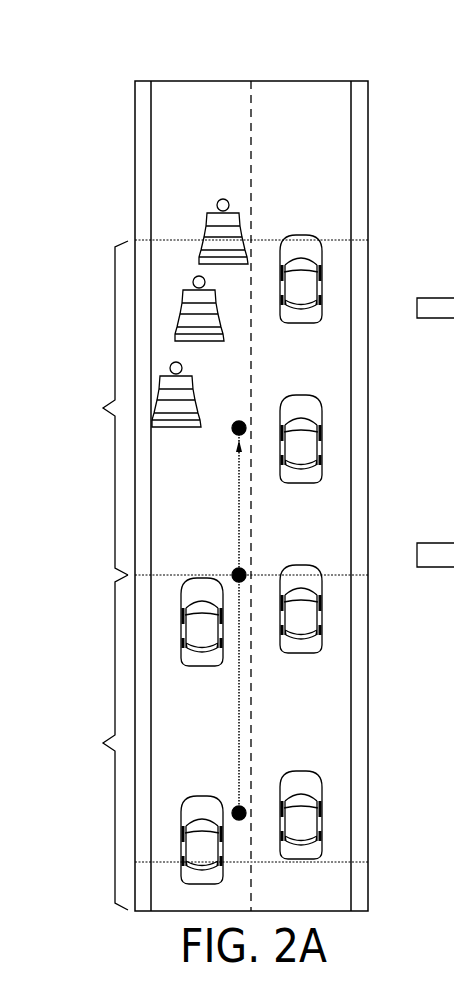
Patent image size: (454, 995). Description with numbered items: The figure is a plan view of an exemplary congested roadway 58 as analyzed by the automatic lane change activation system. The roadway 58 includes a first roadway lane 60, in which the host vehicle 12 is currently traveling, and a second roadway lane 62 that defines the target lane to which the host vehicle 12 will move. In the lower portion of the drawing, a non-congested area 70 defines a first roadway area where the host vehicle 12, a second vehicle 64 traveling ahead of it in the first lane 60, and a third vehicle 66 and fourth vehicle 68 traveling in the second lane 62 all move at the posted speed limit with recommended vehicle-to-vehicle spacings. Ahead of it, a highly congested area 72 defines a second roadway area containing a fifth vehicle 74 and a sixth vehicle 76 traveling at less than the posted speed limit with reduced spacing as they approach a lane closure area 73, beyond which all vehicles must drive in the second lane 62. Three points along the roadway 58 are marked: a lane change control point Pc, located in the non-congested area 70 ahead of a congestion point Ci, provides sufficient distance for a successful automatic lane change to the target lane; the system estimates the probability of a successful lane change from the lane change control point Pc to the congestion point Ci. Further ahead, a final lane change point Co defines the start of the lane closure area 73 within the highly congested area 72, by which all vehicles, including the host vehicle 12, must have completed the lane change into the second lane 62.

The host vehicle 12 is at (200, 876).
The roadway 58 is at (390, 95).
The first roadway lane 60 is at (197, 100).
The second roadway lane 62 is at (297, 110).
The second vehicle 64 is at (203, 664).
The third vehicle 66 is at (305, 822).
The fourth vehicle 68 is at (305, 614).
The non-congested area 70 is at (102, 742).
The highly congested area 72 is at (102, 408).
The lane closure area 73 is at (210, 396).
The fifth vehicle 74 is at (303, 447).
The sixth vehicle 76 is at (303, 286).
The final lane change point Co is at (246, 421).
The congestion point Ci is at (246, 571).
The lane change control point Pc is at (246, 808).